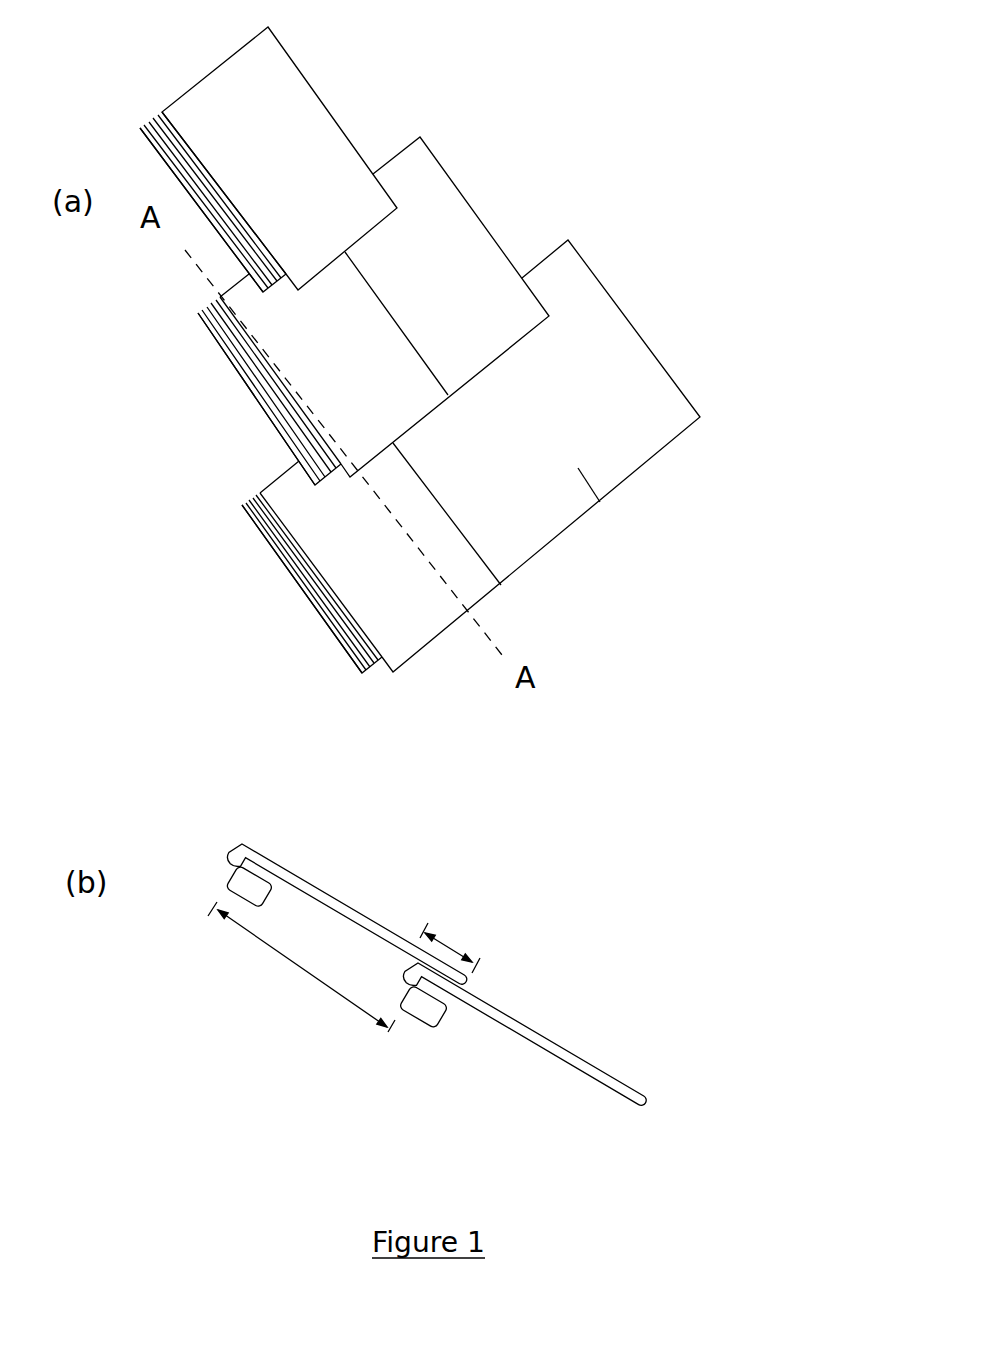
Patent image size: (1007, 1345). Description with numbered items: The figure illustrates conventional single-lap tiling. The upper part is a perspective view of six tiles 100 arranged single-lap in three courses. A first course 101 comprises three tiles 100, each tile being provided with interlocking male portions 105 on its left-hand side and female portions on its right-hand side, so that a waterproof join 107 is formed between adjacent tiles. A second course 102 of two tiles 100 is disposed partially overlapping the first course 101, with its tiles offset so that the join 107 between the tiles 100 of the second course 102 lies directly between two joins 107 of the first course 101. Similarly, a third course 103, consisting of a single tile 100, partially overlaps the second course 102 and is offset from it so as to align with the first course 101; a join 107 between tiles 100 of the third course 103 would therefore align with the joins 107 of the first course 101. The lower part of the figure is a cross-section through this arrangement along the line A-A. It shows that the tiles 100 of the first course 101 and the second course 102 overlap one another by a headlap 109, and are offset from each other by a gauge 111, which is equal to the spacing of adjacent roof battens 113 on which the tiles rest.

The tile 100 is at (603, 440).
The first course 101 is at (235, 572).
The second course 102 is at (197, 391).
The third course 103 is at (377, 103).
The interlocking male portion 105 is at (320, 607).
The join 107 is at (578, 468).
The headlap 109 is at (455, 950).
The gauge 111 is at (283, 957).
The roof batten 113 is at (427, 1008).